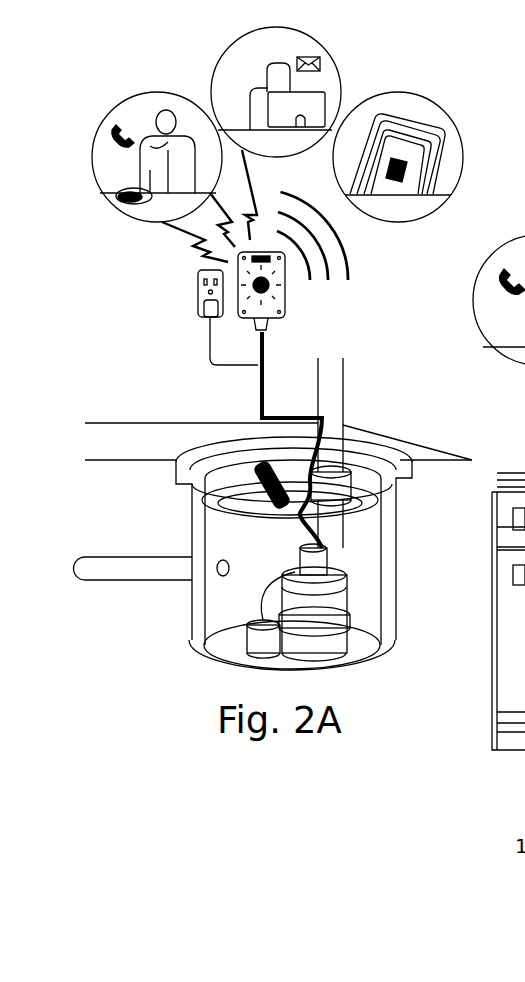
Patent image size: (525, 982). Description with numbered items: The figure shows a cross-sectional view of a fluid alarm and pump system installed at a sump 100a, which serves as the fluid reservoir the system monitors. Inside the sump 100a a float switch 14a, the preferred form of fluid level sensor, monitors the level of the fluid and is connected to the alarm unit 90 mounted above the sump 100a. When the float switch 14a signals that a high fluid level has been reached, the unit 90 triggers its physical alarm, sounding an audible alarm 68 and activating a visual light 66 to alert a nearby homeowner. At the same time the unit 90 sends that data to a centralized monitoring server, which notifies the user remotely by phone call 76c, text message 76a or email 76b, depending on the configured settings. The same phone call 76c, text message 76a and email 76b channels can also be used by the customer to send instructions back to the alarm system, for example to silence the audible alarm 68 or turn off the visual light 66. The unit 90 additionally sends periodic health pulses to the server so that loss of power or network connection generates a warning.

The text message 76a is at (430, 165).
The email 76b is at (315, 92).
The phone call 76c is at (136, 115).
The audible alarm 68 is at (326, 256).
The visual light 66 is at (183, 244).
The unit 90 is at (260, 283).
The float switch 14a is at (270, 498).
The sump 100a is at (220, 653).